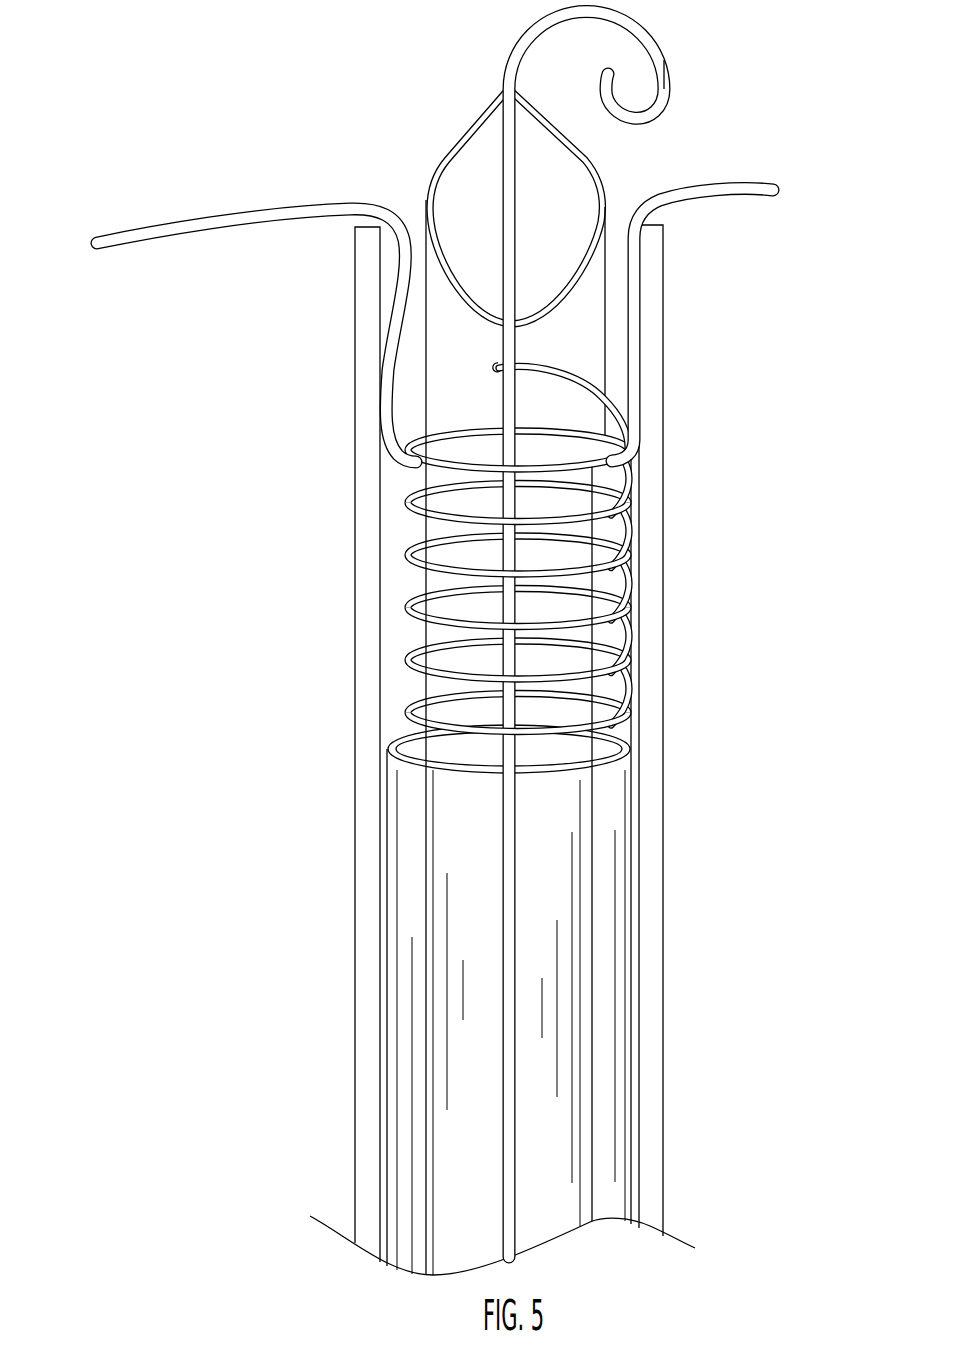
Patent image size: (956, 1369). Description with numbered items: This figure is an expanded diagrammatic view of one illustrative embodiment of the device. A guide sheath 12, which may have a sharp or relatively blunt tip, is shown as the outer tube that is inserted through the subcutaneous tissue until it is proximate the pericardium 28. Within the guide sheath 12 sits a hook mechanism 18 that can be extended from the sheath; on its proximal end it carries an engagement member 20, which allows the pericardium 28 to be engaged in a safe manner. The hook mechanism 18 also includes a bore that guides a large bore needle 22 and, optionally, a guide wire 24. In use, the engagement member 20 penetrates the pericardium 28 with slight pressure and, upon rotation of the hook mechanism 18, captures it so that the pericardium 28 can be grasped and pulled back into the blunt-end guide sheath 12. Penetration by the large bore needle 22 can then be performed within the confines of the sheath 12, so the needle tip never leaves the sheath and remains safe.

The guide sheath 12 is at (354, 712).
The hook mechanism 18 is at (613, 792).
The engagement member 20 is at (620, 531).
The large bore needle 22 is at (577, 285).
The guide wire 24 is at (664, 48).
The pericardium 28 is at (208, 217).